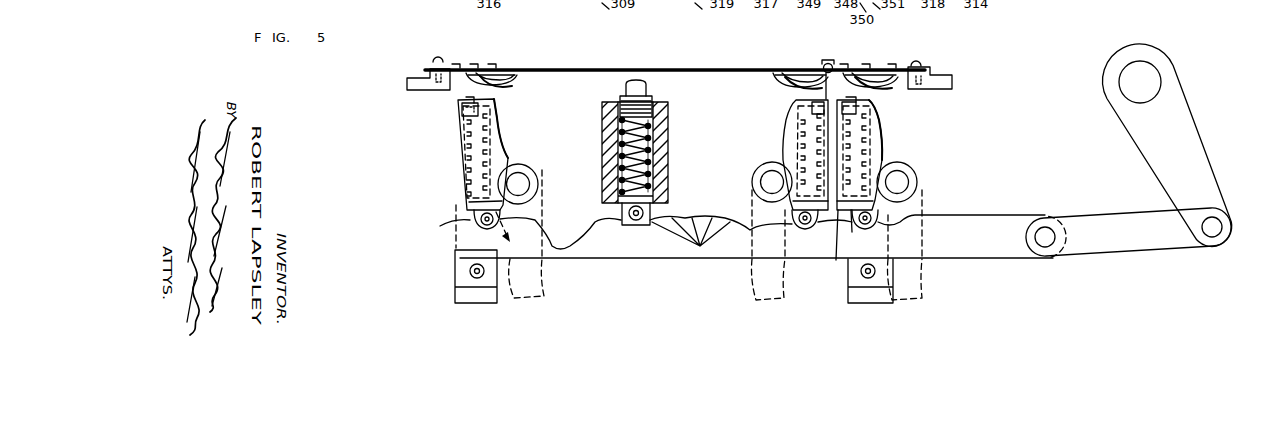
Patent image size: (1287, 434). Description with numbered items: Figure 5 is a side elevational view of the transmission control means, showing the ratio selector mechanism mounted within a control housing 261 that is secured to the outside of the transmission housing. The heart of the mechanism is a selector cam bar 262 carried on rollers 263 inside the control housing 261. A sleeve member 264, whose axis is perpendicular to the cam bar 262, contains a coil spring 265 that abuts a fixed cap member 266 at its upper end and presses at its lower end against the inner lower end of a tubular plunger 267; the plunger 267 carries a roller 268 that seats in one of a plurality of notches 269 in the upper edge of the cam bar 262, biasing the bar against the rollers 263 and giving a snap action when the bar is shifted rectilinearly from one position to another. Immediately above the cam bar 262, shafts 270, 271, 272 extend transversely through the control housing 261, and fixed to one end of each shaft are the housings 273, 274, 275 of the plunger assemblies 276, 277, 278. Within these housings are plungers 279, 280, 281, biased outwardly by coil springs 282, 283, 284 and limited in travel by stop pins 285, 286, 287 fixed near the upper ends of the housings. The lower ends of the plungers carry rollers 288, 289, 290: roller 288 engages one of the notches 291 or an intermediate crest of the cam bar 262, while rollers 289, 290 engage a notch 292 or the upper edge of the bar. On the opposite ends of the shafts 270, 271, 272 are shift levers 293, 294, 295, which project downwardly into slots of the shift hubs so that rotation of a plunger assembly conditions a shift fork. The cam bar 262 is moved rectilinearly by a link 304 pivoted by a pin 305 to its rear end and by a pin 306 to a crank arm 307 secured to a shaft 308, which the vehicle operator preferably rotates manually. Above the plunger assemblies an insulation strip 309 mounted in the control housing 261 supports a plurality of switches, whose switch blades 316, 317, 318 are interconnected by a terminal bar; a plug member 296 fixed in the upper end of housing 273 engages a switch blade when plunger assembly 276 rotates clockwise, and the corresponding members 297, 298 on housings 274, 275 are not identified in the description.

The control housing 261 is at (414, 82).
The selector cam bar 262 is at (968, 220).
The rollers 263 is at (470, 272).
The sleeve member 264 is at (666, 142).
The coil spring 265 is at (644, 162).
The cap member 266 is at (652, 102).
The tubular plunger 267 is at (652, 198).
The roller 268 is at (647, 212).
The notches 269 is at (691, 236).
The shaft 270 is at (518, 182).
The shaft 271 is at (771, 181).
The shaft 272 is at (898, 182).
The housing 273 is at (460, 160).
The housing 274 is at (787, 135).
The housing 275 is at (884, 148).
The plunger assembly 276 is at (447, 190).
The plunger assembly 277 is at (750, 162).
The plunger assembly 278 is at (940, 151).
The plunger 279 is at (480, 219).
The plunger 280 is at (808, 230).
The plunger 281 is at (853, 235).
The coil spring 282 is at (504, 128).
The coil spring 283 is at (790, 120).
The coil spring 284 is at (887, 134).
The stop pin 285 is at (456, 132).
The stop pin 286 is at (810, 153).
The stop pin 287 is at (881, 124).
The roller 288 is at (519, 229).
The roller 289 is at (788, 241).
The roller 290 is at (876, 226).
The notches 291 is at (462, 242).
The notch 292 is at (832, 262).
The shift lever 293 is at (536, 296).
The shift lever 294 is at (750, 282).
The shift lever 295 is at (920, 291).
The plug member 296 is at (460, 98).
The guide pin 297 is at (824, 64).
The band clamp 298 is at (858, 98).
The link 304 is at (1142, 243).
The pin 305 is at (1045, 234).
The pin 306 is at (1222, 240).
The crank arm 307 is at (1196, 150).
The shaft 308 is at (1148, 78).
The insulation strip 309 is at (612, 70).
The switch blade 316 is at (488, 78).
The switch blade 317 is at (797, 75).
The switch blade 318 is at (872, 75).